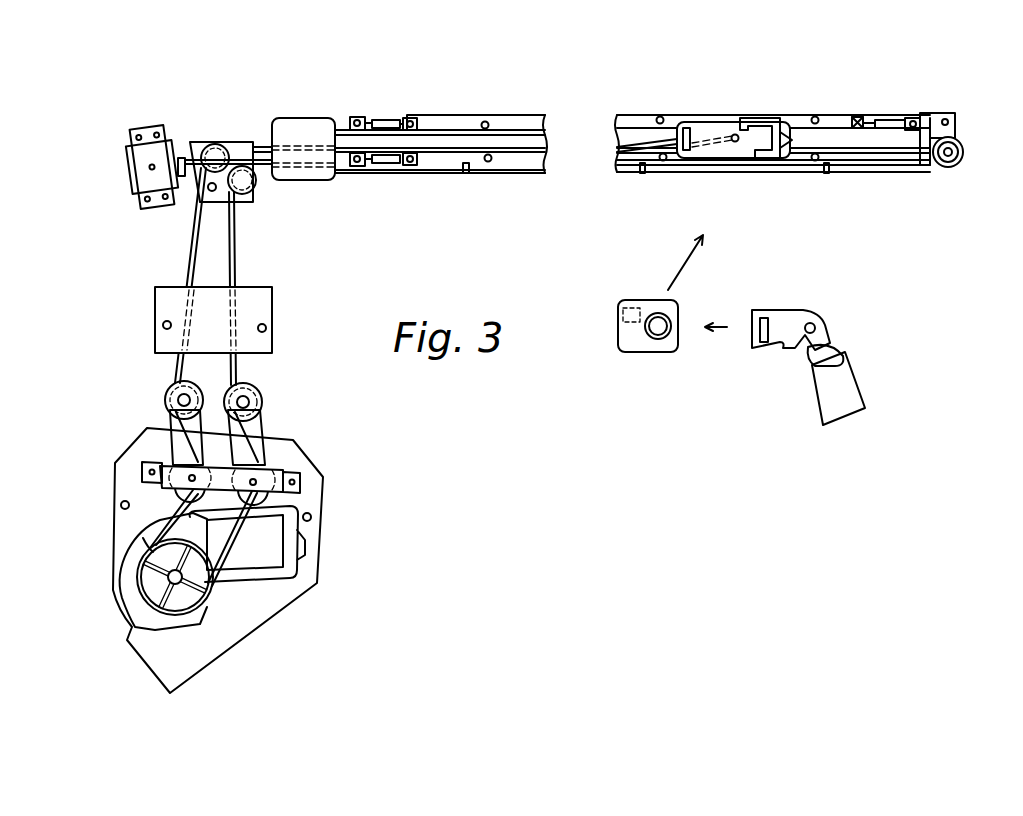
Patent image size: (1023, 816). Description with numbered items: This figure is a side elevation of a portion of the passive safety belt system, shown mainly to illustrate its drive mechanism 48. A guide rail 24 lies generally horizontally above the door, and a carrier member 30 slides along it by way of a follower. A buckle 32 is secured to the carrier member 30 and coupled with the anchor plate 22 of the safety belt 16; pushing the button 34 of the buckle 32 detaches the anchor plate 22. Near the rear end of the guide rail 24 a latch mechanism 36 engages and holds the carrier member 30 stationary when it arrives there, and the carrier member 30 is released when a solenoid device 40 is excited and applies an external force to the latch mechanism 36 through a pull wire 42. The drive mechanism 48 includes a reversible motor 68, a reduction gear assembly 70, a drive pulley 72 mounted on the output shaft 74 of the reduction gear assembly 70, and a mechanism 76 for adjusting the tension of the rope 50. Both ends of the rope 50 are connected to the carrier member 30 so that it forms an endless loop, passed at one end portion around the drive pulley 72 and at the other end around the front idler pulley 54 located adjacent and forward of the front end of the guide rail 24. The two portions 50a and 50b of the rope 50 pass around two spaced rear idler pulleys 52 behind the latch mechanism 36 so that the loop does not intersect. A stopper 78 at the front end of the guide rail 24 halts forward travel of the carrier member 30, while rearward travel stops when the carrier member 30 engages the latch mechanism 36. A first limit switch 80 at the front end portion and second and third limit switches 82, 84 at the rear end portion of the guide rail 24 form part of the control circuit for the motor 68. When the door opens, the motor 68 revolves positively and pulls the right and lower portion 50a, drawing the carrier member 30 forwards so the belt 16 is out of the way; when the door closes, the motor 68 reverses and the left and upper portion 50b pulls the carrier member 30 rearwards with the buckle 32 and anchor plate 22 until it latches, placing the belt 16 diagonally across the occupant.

The safety belt 16 is at (823, 402).
The anchor plate 22 is at (777, 320).
The guide rail 24 is at (510, 130).
The carrier member 30 is at (703, 155).
The buckle 32 is at (637, 348).
The button 34 is at (661, 337).
The latch mechanism 36 is at (279, 128).
The solenoid device 40 is at (137, 180).
The pull wire 42 is at (240, 153).
The drive mechanism 48 is at (319, 451).
The rope 50 is at (253, 375).
The right and lower portion of the rope 50a is at (235, 272).
The left and upper portion of the rope 50b is at (197, 247).
The rear idler pulleys 52 is at (207, 143).
The front idler pulley 54 is at (963, 160).
The motor 68 is at (278, 543).
The reduction gear assembly 70 is at (150, 531).
The drive pulley 72 is at (201, 615).
The output shaft 74 is at (212, 596).
The tension adjusting mechanism 76 is at (258, 428).
The stopper 78 is at (928, 130).
The first limit switch 80 is at (885, 119).
The second limit switch 82 is at (383, 120).
The third limit switch 84 is at (392, 166).